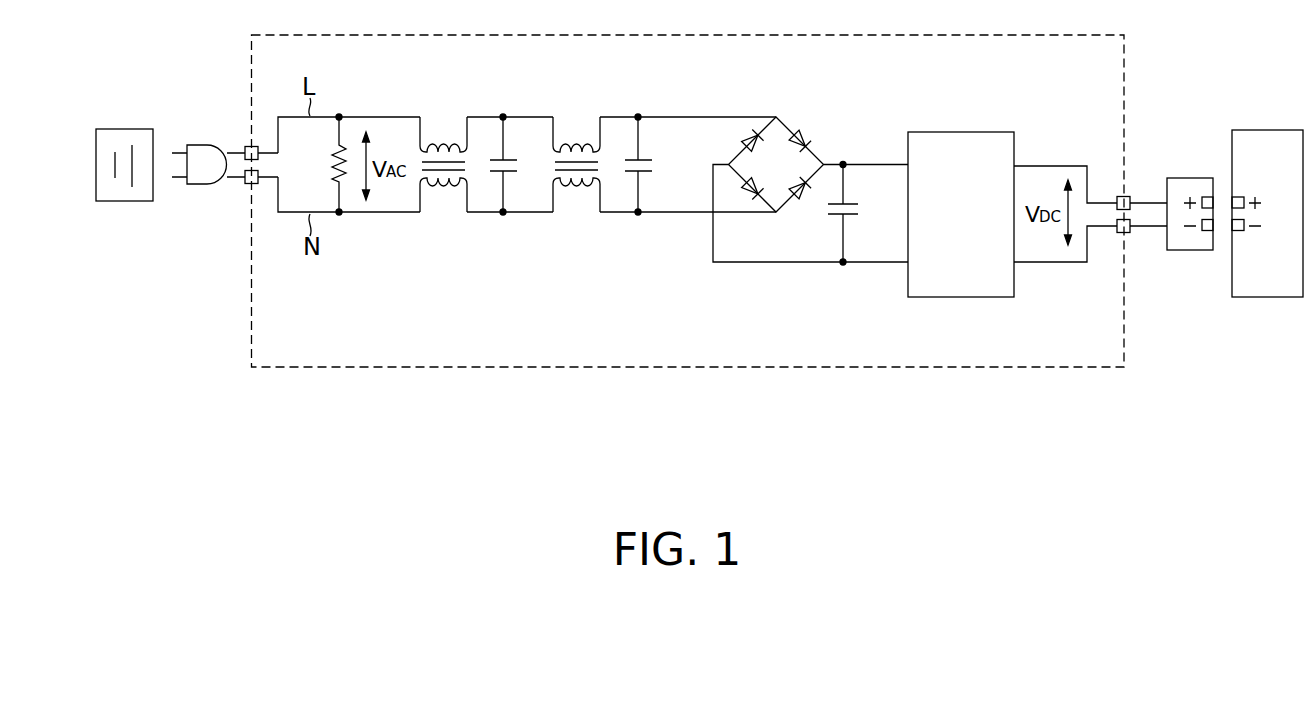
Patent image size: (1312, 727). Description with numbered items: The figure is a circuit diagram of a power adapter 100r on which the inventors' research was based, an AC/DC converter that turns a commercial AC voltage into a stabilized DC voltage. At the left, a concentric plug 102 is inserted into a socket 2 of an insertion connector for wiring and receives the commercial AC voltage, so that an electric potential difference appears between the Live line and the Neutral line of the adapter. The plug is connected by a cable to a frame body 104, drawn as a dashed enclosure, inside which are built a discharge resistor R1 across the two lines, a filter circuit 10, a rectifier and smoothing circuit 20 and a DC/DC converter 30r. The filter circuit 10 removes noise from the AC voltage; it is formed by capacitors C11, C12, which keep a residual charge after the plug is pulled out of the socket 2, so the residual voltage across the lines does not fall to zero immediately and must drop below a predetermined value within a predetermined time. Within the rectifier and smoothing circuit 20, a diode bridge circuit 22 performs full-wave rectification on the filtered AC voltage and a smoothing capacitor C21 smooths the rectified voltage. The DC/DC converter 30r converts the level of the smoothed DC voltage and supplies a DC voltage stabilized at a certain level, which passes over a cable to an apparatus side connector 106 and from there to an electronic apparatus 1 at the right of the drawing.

The electronic apparatus 1 is at (1260, 130).
The socket 2 is at (124, 128).
The filter circuit 10 is at (591, 191).
The rectifier and smoothing circuit 20 is at (806, 198).
The diode bridge circuit 22 is at (817, 127).
The DC/DC converter 30r is at (960, 298).
The power adapter 100r is at (703, 508).
The concentric plug 102 is at (196, 185).
The frame body 104 is at (688, 368).
The apparatus side connector 106 is at (1185, 251).
The discharge resistor R1 is at (328, 161).
The capacitor C11 is at (521, 165).
The capacitor C12 is at (658, 164).
The smoothing capacitor C21 is at (865, 214).